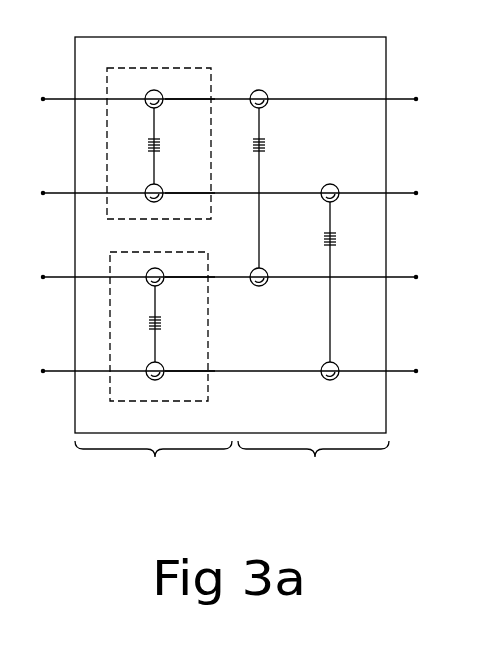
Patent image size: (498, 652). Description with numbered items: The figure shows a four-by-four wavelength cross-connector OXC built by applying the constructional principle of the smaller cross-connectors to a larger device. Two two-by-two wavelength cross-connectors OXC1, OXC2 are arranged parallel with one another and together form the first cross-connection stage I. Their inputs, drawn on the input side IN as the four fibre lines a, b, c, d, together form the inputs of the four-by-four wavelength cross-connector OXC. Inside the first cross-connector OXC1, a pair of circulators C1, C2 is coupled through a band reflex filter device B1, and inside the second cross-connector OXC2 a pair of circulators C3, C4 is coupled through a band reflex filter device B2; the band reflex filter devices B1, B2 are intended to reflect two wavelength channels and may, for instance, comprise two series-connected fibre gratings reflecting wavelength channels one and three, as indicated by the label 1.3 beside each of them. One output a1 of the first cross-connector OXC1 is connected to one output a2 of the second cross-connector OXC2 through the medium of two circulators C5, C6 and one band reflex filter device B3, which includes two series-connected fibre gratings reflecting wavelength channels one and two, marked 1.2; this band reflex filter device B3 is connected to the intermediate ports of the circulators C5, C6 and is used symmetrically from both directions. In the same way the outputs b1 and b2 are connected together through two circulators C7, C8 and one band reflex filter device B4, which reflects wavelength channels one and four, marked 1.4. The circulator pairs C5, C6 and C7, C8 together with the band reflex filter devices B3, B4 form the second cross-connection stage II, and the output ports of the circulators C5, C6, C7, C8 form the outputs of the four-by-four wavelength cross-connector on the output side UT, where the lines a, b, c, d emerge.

The 4×4 wavelength cross-connector OXC is at (228, 219).
The 2×2 wavelength cross-connector OXC1 is at (157, 131).
The 2×2 wavelength cross-connector OXC2 is at (157, 314).
The input side IN is at (49, 55).
The output side UT is at (421, 55).
The fiber line a is at (232, 89).
The fiber line b is at (232, 181).
The fiber line c is at (232, 265).
The fiber line d is at (232, 361).
The output a1 is at (190, 89).
The output b1 is at (190, 206).
The output a2 is at (190, 293).
The output b2 is at (190, 387).
The circulator C1 is at (139, 92).
The circulator C2 is at (138, 202).
The circulator C3 is at (138, 271).
The circulator C4 is at (138, 382).
The circulator C5 is at (241, 92).
The circulator C6 is at (243, 271).
The circulator C7 is at (313, 186).
The circulator C8 is at (314, 363).
The band reflex filter device B1 is at (139, 146).
The band reflex filter device B2 is at (139, 324).
The band reflex filter device B3 is at (242, 188).
The band reflex filter device B4 is at (313, 282).
The reflected wavelength channels 1.3 is at (182, 240).
The reflected wavelength channels 1.2 is at (289, 148).
The reflected wavelength channels 1.4 is at (361, 243).
The first cross-connection stage I is at (153, 469).
The second cross-connection stage II is at (313, 469).